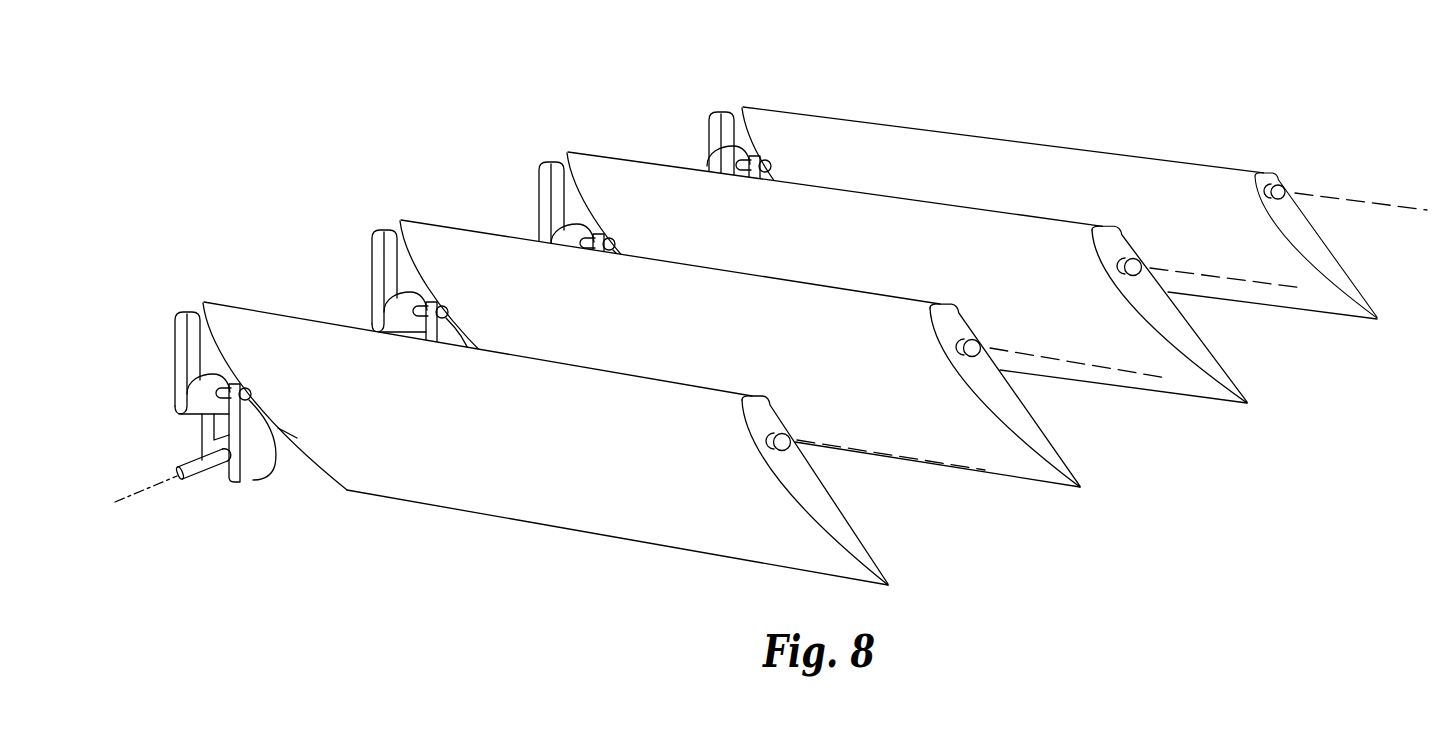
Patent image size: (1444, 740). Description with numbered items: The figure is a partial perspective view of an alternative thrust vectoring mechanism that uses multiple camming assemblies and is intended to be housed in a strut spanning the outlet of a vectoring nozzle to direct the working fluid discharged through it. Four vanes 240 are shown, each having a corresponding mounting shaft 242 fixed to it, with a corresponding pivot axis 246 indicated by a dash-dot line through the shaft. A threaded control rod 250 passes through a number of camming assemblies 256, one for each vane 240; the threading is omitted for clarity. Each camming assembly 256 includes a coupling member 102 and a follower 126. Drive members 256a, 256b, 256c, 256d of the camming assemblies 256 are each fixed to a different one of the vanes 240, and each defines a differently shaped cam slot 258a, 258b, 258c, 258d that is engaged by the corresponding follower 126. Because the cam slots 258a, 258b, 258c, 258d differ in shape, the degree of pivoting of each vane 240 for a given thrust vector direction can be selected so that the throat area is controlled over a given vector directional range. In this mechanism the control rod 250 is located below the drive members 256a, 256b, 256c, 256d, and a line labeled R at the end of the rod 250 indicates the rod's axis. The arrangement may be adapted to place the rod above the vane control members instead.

The vane 240 is at (888, 585).
The mounting shaft 242 is at (784, 434).
The pivot axis 246 is at (953, 478).
The camming assembly 256 is at (436, 225).
The drive member 256a is at (177, 355).
The drive member 256b is at (370, 253).
The drive member 256c is at (538, 187).
The drive member 256d is at (708, 128).
The cam slot 258a is at (187, 392).
The cam slot 258b is at (420, 289).
The cam slot 258c is at (582, 216).
The cam slot 258d is at (745, 153).
The follower 126 is at (250, 404).
The coupling member 102 is at (232, 482).
The threaded control rod 250 is at (186, 497).
The axis of rotation R is at (118, 508).